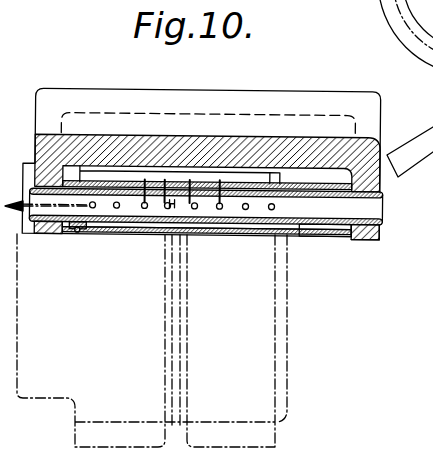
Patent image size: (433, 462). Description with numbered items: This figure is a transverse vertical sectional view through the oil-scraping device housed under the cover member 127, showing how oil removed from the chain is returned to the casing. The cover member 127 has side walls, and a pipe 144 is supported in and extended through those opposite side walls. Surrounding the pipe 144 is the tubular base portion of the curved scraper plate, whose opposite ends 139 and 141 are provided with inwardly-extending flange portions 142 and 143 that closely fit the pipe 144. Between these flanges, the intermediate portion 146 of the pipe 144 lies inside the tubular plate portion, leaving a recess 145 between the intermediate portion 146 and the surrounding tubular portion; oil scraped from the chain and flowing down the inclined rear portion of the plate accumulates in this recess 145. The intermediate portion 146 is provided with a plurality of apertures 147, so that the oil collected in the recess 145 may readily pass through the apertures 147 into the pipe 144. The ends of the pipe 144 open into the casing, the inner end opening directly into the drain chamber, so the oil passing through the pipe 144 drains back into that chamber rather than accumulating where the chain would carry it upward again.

The cover member 127 is at (292, 104).
The end of the tubular portion 139 is at (75, 236).
The end of the tubular portion 141 is at (326, 243).
The inwardly-extending flange portion 142 is at (77, 236).
The inwardly-extending flange portion 143 is at (317, 237).
The pipe 144 is at (230, 168).
The recess 145 is at (148, 237).
The intermediate portion of the pipe 146 is at (222, 236).
The apertures 147 is at (202, 187).